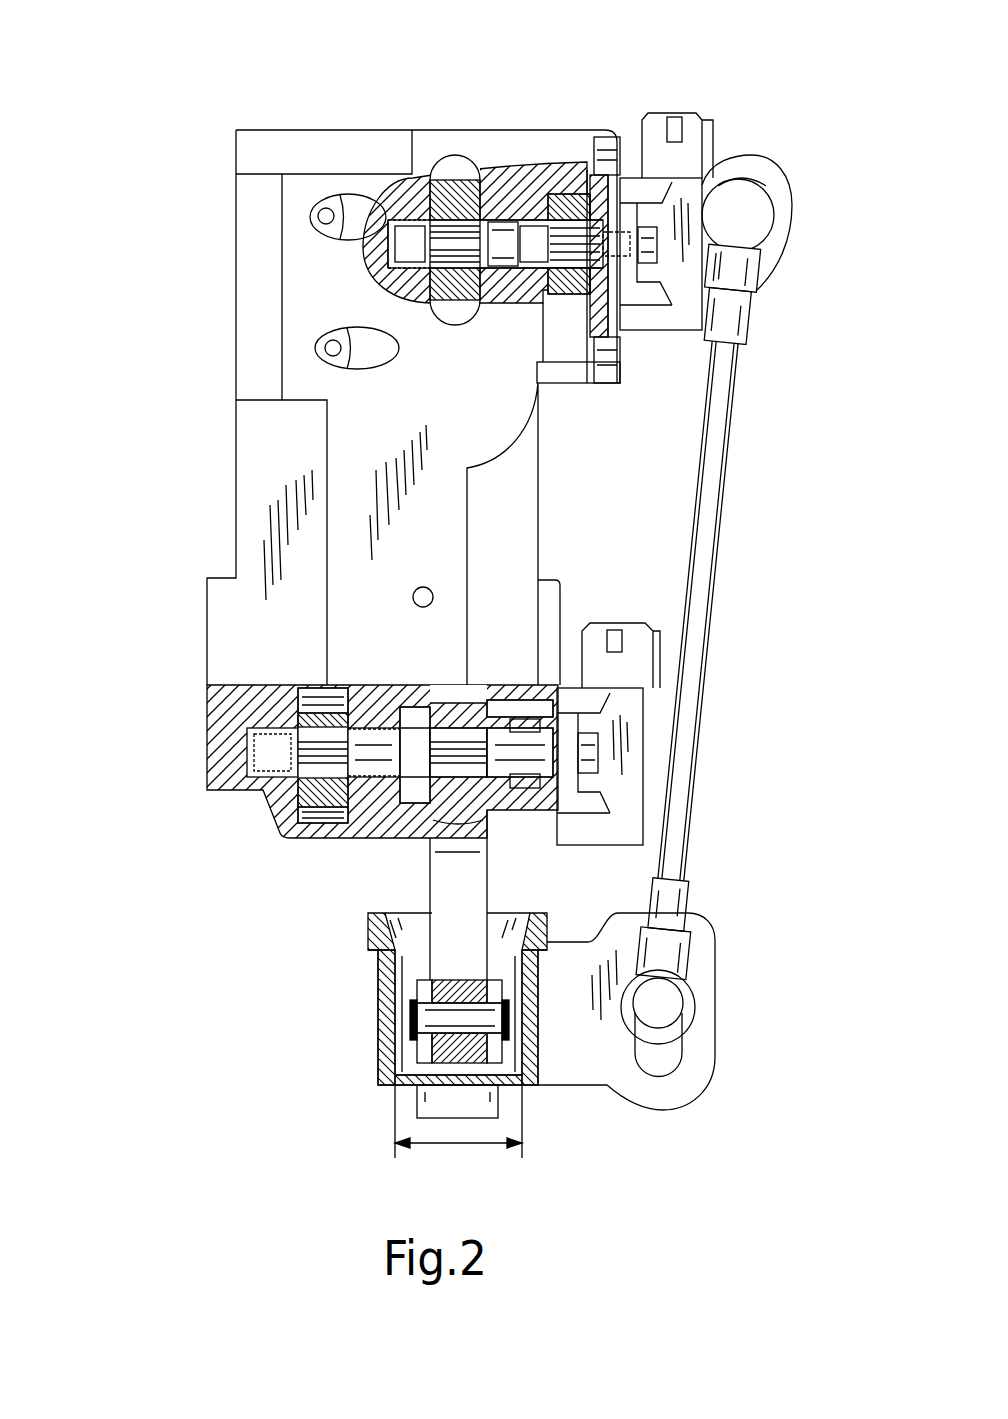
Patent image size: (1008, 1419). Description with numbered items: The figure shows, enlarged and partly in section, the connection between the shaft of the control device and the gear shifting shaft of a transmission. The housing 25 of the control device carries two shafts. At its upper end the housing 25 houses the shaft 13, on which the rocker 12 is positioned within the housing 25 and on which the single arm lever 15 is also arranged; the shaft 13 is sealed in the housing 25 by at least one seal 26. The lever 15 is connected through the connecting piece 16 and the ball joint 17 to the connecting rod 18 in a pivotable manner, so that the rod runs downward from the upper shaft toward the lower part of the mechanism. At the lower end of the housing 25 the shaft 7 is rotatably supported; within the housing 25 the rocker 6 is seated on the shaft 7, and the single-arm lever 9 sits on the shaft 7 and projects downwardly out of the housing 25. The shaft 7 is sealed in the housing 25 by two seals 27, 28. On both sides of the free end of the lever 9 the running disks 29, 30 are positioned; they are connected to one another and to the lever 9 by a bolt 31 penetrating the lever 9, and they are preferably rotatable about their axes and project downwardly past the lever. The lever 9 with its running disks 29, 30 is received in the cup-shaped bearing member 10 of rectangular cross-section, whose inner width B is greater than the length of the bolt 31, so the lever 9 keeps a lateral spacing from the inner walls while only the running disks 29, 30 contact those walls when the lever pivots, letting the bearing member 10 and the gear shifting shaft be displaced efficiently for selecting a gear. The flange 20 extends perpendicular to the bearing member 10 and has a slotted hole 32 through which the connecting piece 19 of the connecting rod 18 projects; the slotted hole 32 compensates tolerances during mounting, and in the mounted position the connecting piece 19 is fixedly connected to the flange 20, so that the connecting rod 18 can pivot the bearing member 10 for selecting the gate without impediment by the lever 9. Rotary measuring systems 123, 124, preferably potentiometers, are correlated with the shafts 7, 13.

The rocker 6 is at (307, 793).
The shaft 7 is at (333, 807).
The single-arm lever 9 is at (458, 948).
The bearing member 10 is at (372, 985).
The rocker 12 is at (455, 195).
The shaft 13 is at (500, 240).
The single arm lever 15 is at (565, 222).
The connecting piece 16 is at (718, 173).
The ball joint 17 is at (780, 158).
The connecting rod 18 is at (713, 446).
The connecting piece 19 is at (660, 1013).
The flange 20 is at (585, 1050).
The housing 25 is at (300, 330).
The seal 26 is at (532, 200).
The seal 27 is at (553, 717).
The seal 28 is at (398, 711).
The running disk 29 is at (432, 1048).
The running disk 30 is at (525, 1088).
The bolt 31 is at (420, 1022).
The slotted hole 32 is at (667, 1053).
The rotary measuring system 123 is at (673, 315).
The rotary measuring system 124 is at (620, 830).